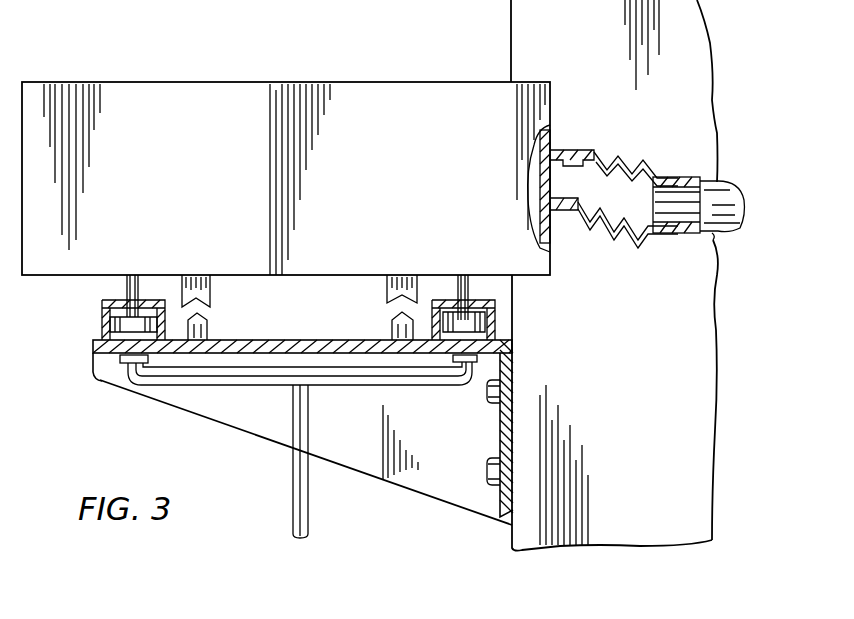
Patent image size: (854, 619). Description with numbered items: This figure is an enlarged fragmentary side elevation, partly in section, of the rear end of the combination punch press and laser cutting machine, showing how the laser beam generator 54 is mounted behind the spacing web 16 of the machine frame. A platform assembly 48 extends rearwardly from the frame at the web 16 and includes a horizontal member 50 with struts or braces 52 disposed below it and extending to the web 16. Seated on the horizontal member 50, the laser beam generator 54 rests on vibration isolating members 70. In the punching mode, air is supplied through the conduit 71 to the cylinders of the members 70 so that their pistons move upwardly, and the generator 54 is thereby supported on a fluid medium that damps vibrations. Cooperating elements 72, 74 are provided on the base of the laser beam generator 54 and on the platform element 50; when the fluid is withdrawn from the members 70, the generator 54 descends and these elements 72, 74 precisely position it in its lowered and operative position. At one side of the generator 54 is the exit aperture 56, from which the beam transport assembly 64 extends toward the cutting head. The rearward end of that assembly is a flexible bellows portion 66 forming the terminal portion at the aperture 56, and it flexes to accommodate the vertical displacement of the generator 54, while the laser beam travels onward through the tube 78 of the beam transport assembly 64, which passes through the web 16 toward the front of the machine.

The spacing web 16 is at (688, 345).
The platform assembly 48 is at (108, 379).
The horizontal member 50 is at (286, 354).
The struts or braces 52 is at (440, 478).
The laser beam generator 54 is at (398, 82).
The exit aperture 56 is at (583, 152).
The beam transport assembly 64 is at (734, 179).
The flexible bellows portion 66 is at (604, 160).
The vibration isolating members 70 is at (100, 302).
The conduit 71 is at (295, 465).
The cooperating element 72 is at (397, 282).
The cooperating element 74 is at (392, 318).
The tube 78 is at (716, 242).